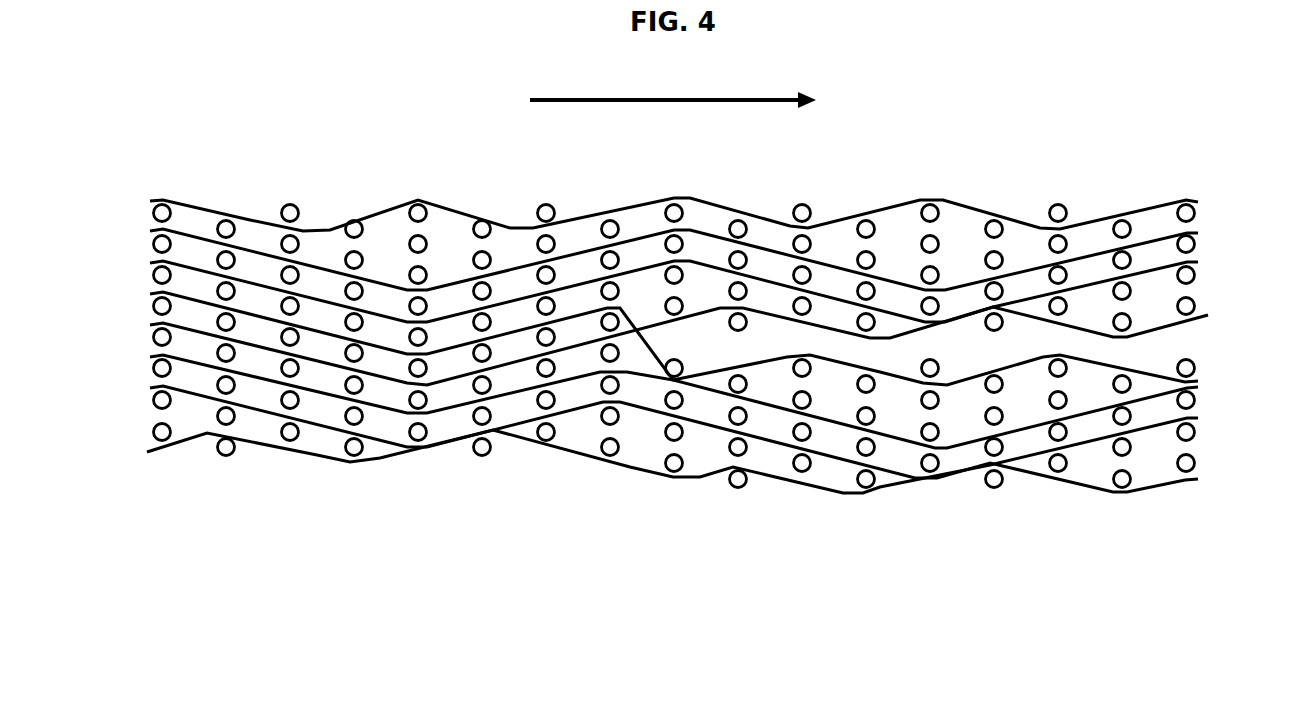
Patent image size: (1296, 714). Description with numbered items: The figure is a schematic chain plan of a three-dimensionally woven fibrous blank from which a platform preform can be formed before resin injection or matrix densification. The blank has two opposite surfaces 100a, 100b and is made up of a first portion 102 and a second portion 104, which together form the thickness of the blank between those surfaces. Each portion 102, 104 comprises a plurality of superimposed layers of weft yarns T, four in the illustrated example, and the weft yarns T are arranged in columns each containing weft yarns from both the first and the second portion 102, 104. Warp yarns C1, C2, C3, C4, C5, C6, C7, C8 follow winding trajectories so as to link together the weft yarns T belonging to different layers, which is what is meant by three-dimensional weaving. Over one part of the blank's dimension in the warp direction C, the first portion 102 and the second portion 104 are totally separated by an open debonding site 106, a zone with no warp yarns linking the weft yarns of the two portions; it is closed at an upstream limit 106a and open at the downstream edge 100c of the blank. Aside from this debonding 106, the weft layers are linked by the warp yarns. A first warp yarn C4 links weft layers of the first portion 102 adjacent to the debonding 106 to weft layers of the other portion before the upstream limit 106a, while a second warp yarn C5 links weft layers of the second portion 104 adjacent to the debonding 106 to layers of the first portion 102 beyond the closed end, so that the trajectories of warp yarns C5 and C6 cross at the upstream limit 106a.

The first surface of fibrous blank 100a is at (679, 186).
The second surface of fibrous blank 100b is at (806, 500).
The downstream edge of fibrous blank 100c is at (1202, 420).
The first portion of fibrous blank 102 is at (137, 204).
The second portion of fibrous blank 104 is at (137, 326).
The open debonding site 106 is at (900, 347).
The upstream limit of open debonding site 106a is at (645, 339).
The warp direction C is at (673, 92).
The warp yarn C1 is at (201, 203).
The warp yarn C2 is at (252, 253).
The warp yarn C3 is at (330, 300).
The first warp yarn C4 is at (310, 330).
The second warp yarn C5 is at (379, 378).
The warp yarn C6 is at (443, 413).
The warp yarn C7 is at (522, 430).
The warp yarn C8 is at (570, 453).
The weft yarn T is at (1058, 211).